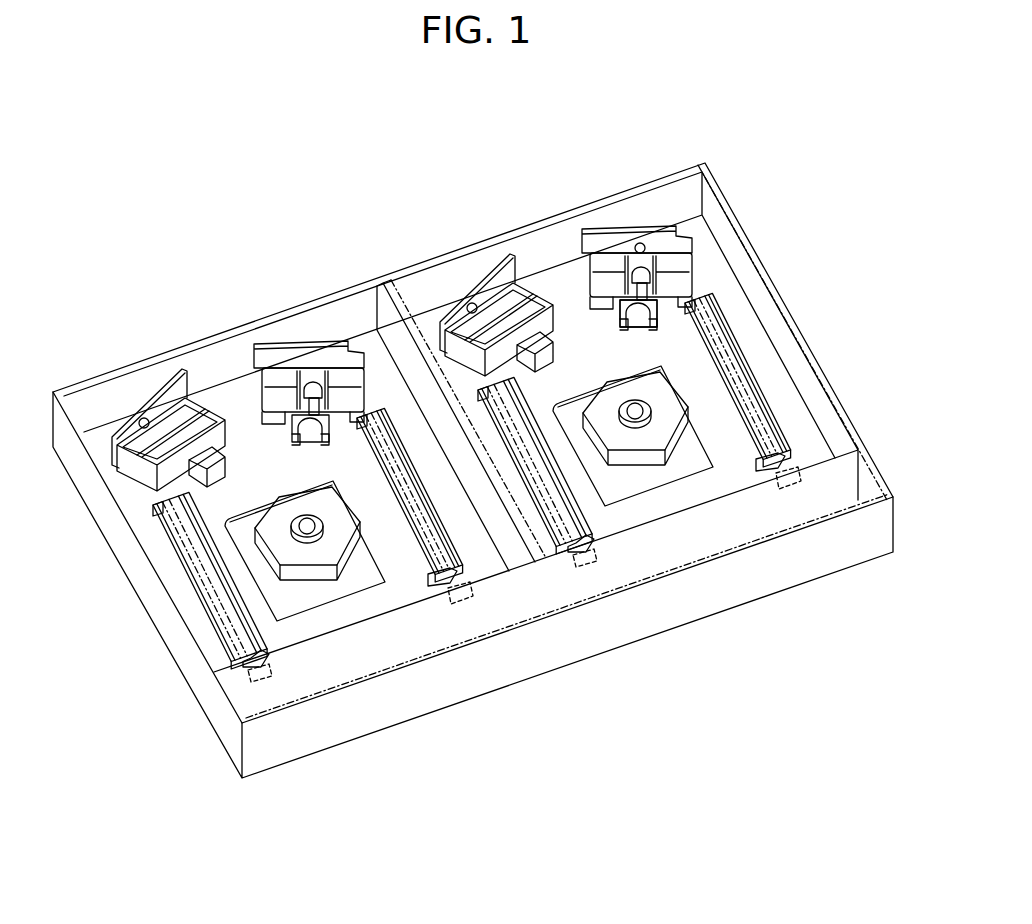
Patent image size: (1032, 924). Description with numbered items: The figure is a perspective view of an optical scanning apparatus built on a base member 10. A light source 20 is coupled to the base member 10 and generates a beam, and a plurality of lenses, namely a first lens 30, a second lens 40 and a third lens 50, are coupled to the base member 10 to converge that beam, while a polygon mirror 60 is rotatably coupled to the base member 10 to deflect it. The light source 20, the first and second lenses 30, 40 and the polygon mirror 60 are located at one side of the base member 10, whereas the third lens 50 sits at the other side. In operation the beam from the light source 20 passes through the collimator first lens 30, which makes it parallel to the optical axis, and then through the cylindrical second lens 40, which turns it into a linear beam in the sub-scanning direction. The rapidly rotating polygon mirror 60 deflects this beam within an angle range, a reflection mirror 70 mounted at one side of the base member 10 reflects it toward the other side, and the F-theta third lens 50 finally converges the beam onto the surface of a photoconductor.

The base member 10 is at (782, 573).
The light source 20 is at (638, 243).
The first lens 30 is at (660, 273).
The second lens 40 is at (655, 303).
The third lens 50 is at (786, 488).
The polygon mirror 60 is at (667, 418).
The reflection mirror 70 is at (710, 352).